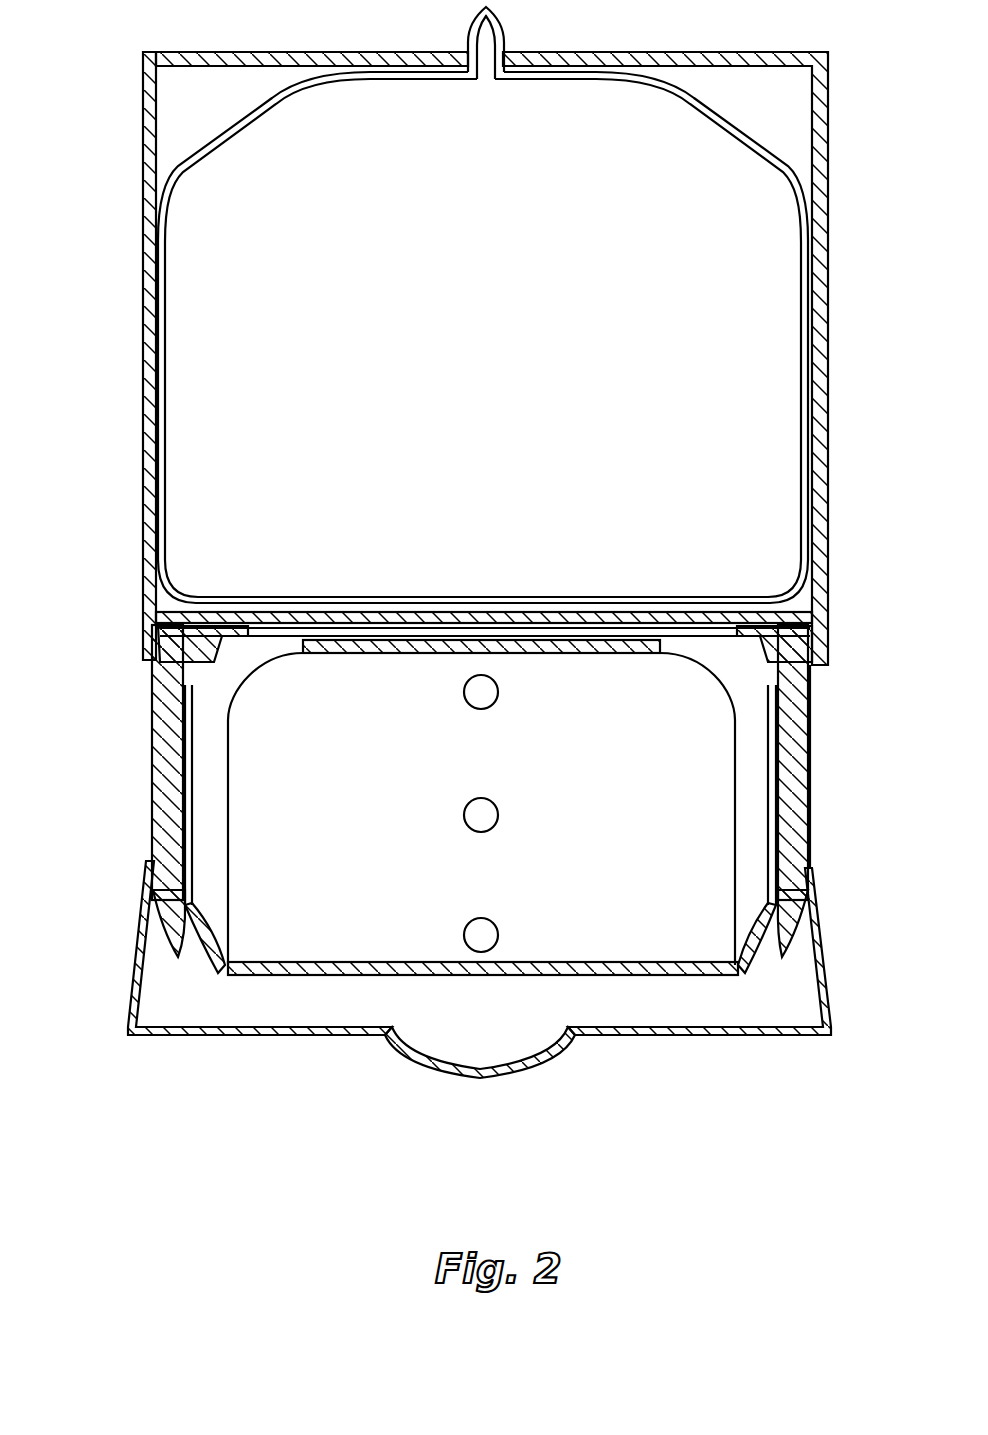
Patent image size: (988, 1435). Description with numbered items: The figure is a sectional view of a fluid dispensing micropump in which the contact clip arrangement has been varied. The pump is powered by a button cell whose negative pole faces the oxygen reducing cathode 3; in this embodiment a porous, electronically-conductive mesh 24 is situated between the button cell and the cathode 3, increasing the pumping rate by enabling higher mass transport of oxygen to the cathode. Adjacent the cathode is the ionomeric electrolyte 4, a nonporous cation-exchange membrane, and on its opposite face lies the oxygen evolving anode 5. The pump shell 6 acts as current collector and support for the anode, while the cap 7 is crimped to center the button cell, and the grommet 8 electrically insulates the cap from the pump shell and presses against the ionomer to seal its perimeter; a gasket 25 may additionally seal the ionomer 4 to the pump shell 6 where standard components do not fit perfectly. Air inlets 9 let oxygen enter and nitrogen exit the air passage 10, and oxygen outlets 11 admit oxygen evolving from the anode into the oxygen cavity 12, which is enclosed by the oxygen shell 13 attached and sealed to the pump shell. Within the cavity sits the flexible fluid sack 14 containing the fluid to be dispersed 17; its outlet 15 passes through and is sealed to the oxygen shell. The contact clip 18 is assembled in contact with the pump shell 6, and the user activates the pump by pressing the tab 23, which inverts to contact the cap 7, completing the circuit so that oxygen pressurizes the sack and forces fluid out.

The oxygen reducing cathode 3 is at (362, 652).
The ionomeric electrolyte 4 is at (158, 662).
The oxygen evolving anode 5 is at (170, 600).
The pump shell 6 is at (160, 740).
The cap 7 is at (235, 975).
The grommet 8 is at (160, 825).
The air inlets 9 is at (212, 935).
The air passage 10 is at (203, 785).
The oxygen outlets 11 is at (322, 632).
The oxygen cavity 12 is at (193, 93).
The oxygen shell 13 is at (143, 121).
The fluid sack 14 is at (168, 177).
The outlet 15 is at (465, 45).
The fluid to be dispersed 17 is at (265, 312).
The contact clip 18 is at (150, 928).
The tab 23 is at (405, 1062).
The porous, electronically-conductive mesh 24 is at (603, 655).
The gasket 25 is at (815, 652).